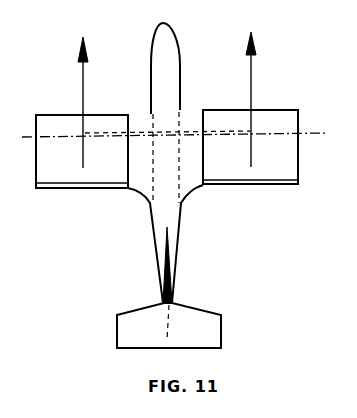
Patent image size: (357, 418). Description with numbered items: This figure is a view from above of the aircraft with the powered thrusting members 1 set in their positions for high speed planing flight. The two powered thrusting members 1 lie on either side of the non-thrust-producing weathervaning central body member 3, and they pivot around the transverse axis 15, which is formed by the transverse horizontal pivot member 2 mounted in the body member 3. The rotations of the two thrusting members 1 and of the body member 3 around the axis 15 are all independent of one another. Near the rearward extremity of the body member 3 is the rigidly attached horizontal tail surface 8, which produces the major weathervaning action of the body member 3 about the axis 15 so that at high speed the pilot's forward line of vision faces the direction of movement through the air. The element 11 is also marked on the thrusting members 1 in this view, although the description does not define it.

The powered thrusting member 1 is at (230, 110).
The transverse horizontal pivot member 2 is at (107, 133).
The central body member 3 is at (180, 60).
The horizontal tail surface 8 is at (215, 326).
The trailing edge flap 11 is at (268, 183).
The transverse axis 15 is at (305, 131).